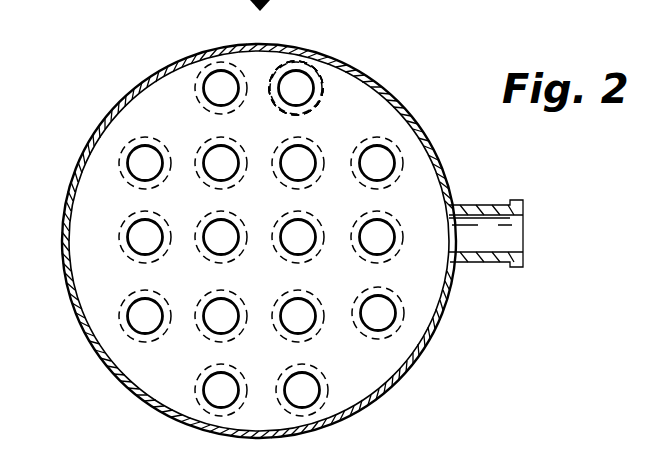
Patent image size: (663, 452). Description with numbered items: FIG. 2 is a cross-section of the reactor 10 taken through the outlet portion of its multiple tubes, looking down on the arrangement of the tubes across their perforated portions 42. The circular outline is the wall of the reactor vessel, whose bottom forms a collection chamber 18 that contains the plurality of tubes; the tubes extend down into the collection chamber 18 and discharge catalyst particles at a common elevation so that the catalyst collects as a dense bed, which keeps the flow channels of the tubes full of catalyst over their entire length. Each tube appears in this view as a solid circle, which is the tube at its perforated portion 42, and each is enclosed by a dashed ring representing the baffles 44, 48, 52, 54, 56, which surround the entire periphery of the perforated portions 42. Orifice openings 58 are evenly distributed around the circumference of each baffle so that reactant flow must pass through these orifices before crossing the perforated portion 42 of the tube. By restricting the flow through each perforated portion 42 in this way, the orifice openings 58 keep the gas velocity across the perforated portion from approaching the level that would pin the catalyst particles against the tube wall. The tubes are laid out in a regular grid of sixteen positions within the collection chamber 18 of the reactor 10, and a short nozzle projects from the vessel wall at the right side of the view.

The reactor 10 is at (62, 200).
The collection chamber 18 is at (420, 273).
The perforated portions 42 is at (396, 230).
The baffle 44 is at (306, 64).
The baffle 48 is at (296, 88).
The baffle 52 is at (296, 88).
The baffle 54 is at (296, 88).
The baffle 56 is at (296, 88).
The orifice openings 58 is at (322, 82).